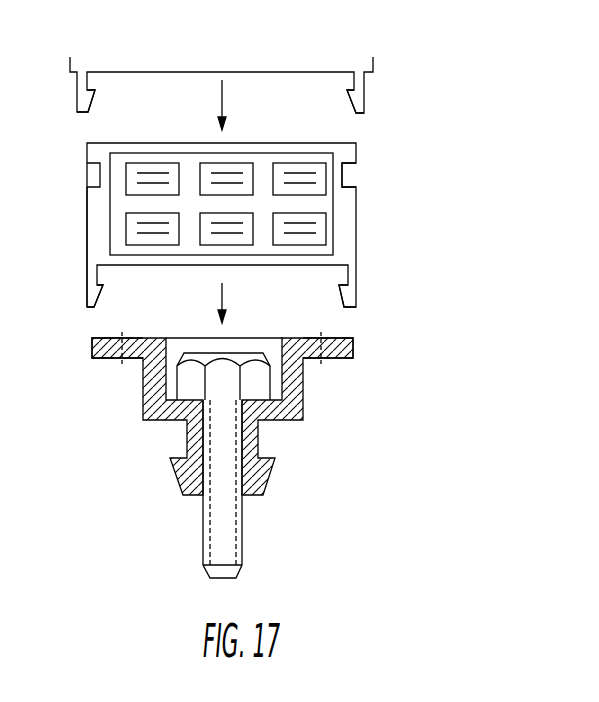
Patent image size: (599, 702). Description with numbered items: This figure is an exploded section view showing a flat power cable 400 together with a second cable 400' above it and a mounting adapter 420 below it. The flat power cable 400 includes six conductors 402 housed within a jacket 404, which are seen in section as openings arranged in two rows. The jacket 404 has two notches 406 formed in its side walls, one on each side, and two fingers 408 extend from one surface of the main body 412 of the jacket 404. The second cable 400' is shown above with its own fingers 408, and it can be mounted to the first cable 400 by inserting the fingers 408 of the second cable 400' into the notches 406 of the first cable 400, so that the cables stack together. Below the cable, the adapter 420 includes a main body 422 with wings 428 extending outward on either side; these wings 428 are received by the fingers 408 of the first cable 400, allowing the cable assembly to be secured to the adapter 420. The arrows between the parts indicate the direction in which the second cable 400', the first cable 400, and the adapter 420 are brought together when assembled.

The second cable 400' is at (246, 65).
The flat power cable 400 is at (269, 225).
The conductors 402 is at (322, 222).
The jacket 404 is at (348, 242).
The notches 406 is at (93, 180).
The fingers 408 is at (358, 103).
The main body 412 is at (92, 241).
The adapter 420 is at (270, 557).
The main body 422 is at (310, 348).
The wings 428 is at (352, 348).